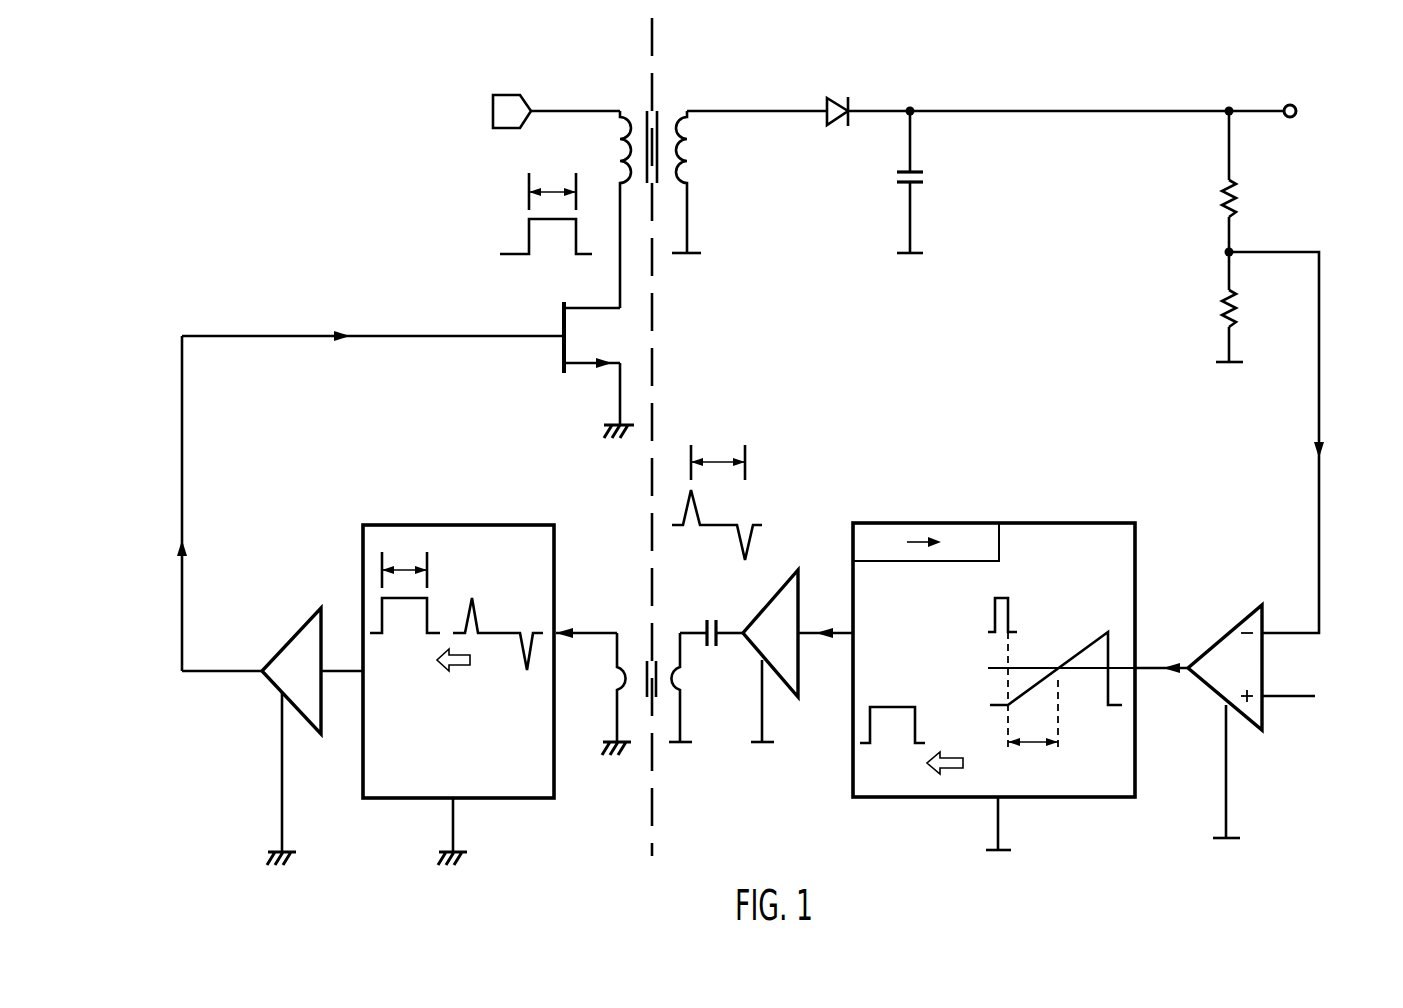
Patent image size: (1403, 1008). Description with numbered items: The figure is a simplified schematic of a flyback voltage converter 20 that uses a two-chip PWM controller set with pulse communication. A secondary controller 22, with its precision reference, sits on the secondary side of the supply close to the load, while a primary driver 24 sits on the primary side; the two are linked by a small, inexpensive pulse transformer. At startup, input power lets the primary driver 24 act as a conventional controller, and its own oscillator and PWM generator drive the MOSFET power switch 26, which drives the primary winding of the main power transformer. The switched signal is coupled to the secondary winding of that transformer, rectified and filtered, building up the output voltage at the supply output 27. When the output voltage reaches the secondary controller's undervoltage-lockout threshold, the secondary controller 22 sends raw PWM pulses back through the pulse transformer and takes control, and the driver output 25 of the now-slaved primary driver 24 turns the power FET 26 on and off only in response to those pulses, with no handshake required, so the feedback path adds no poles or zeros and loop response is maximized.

The power converter 20 is at (1395, 220).
The secondary controller 22 is at (1072, 530).
The primary driver 24 is at (528, 530).
The driver output 25 is at (182, 617).
The MOSFET power switch 26 is at (561, 320).
The output 27 is at (1254, 106).